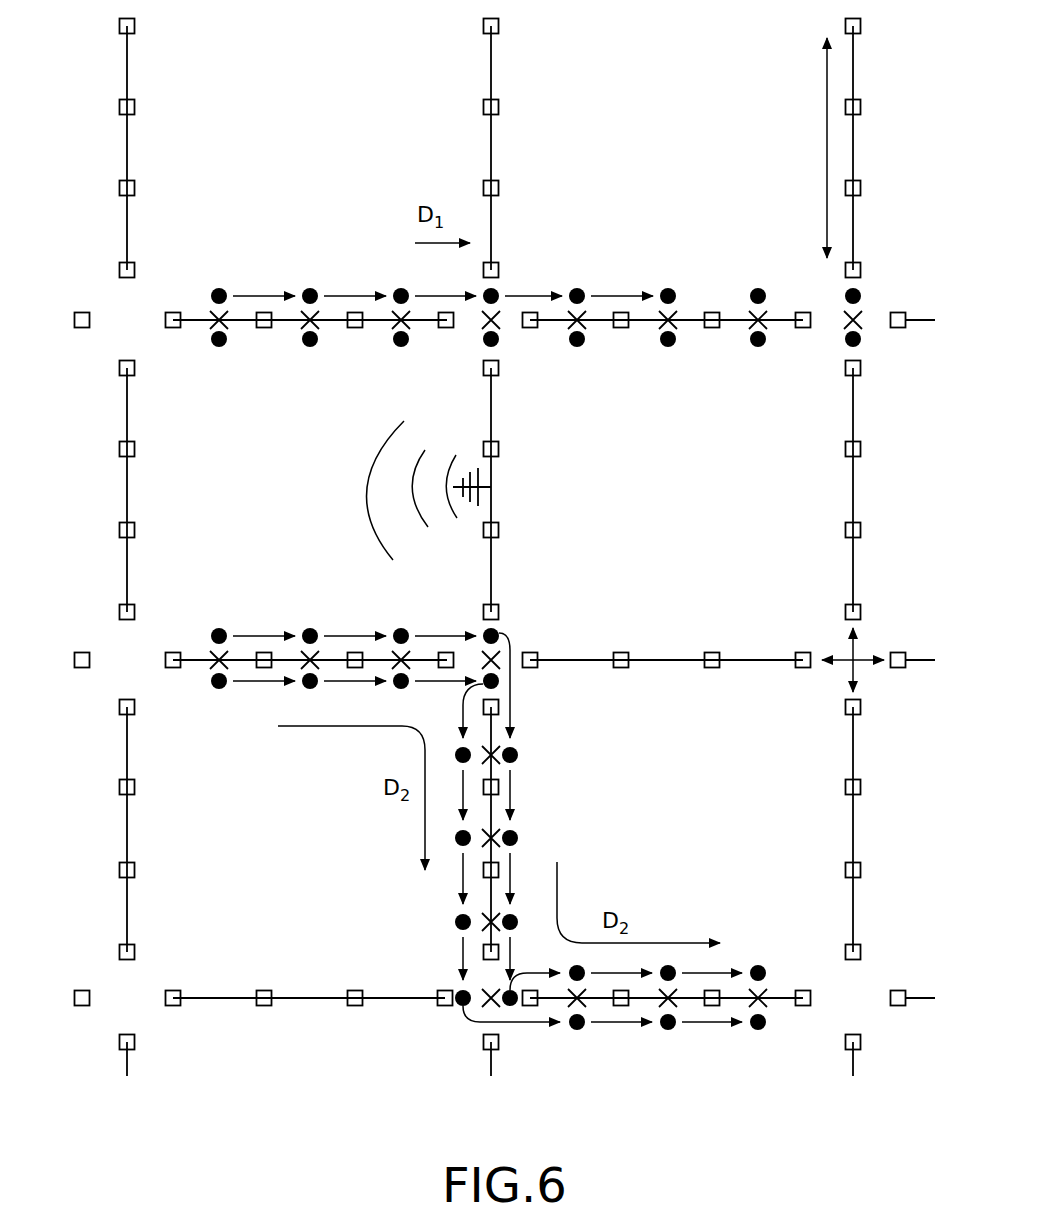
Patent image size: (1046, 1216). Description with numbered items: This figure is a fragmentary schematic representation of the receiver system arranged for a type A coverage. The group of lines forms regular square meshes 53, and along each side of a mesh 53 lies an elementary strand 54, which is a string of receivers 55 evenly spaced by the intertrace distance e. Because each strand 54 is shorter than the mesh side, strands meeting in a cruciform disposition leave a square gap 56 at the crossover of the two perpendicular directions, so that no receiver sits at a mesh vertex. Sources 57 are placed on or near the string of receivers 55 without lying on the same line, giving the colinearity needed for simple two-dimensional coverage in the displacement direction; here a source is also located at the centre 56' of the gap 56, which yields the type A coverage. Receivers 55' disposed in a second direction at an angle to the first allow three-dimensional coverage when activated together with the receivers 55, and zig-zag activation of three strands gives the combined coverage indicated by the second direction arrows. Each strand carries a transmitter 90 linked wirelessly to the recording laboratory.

The mesh 53 is at (678, 461).
The elementary strand 54 is at (506, 103).
The receiver 55 is at (539, 479).
The receiver 55' is at (709, 478).
The square gap 56 is at (820, 680).
The centre of the gap 56' is at (813, 344).
The source 57 is at (224, 288).
The transmitter 90 is at (470, 514).